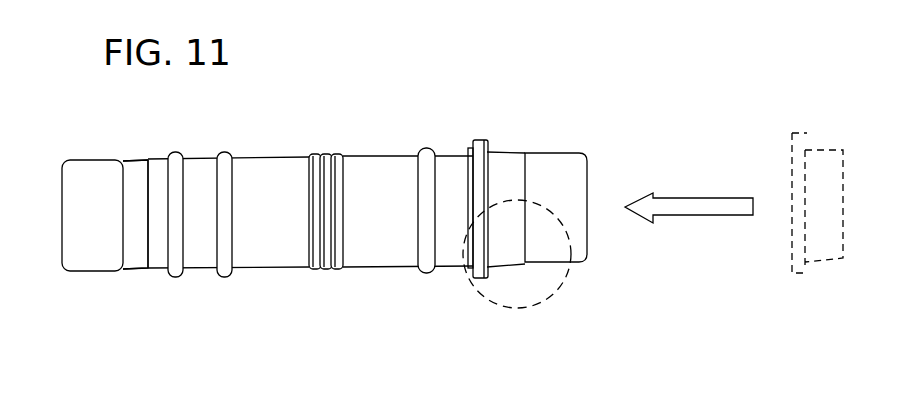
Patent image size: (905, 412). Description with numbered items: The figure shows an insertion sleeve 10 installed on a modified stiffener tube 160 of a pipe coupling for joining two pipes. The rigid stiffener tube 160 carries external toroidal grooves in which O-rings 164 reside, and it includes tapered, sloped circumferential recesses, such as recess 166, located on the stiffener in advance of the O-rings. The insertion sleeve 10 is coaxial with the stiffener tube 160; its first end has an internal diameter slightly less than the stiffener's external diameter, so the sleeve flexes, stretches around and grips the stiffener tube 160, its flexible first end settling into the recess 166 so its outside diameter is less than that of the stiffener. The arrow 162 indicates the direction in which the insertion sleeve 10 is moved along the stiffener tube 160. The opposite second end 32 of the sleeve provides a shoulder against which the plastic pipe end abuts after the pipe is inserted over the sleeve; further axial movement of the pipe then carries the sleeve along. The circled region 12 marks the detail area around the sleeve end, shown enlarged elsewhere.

The insertion sleeve 10 is at (502, 152).
The seal region 12 is at (553, 293).
The second end 32 is at (483, 295).
The stiffener tube 160 is at (103, 168).
The arrow 162 is at (693, 203).
The O-rings 164 is at (177, 152).
The recess 166 is at (132, 270).